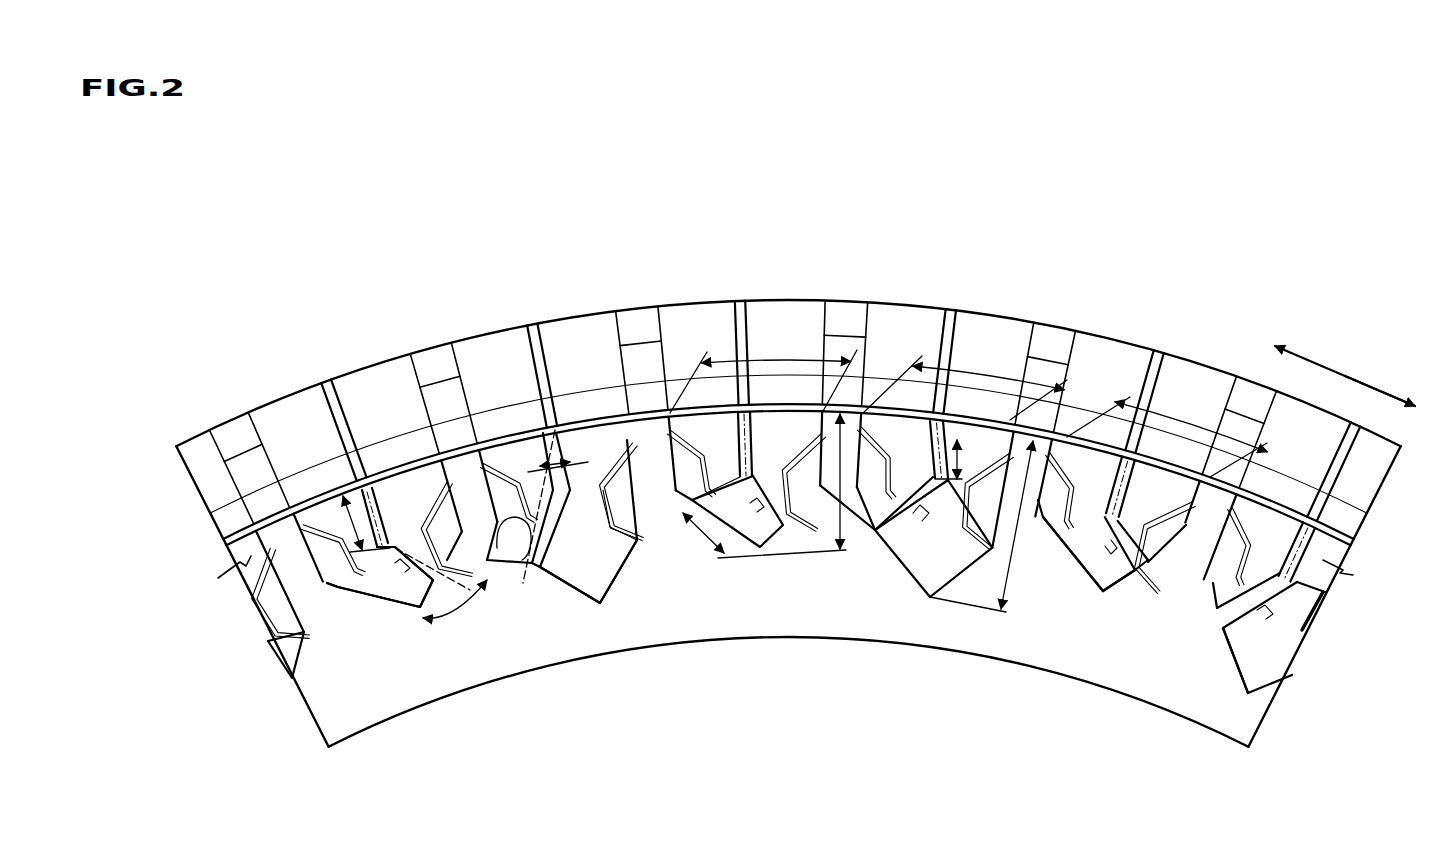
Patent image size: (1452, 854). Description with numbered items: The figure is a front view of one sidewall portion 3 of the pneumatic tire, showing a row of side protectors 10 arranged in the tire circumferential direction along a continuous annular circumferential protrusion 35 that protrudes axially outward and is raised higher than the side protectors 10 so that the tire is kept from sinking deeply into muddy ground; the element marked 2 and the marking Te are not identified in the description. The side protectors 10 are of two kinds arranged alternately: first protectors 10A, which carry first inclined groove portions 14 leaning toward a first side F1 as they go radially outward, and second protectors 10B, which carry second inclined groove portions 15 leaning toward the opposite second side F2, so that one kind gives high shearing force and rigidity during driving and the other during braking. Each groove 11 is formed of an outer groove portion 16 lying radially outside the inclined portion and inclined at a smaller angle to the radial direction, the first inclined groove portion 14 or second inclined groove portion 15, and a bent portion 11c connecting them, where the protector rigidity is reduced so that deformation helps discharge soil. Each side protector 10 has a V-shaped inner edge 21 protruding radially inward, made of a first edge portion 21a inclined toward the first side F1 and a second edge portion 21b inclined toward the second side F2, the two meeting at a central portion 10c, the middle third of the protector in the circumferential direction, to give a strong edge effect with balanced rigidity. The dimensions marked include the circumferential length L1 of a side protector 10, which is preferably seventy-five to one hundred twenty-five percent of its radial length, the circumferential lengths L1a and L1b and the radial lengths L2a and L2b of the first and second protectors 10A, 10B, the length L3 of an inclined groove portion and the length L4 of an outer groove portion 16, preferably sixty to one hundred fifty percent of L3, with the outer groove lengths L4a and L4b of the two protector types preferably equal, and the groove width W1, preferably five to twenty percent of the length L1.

The stator core 2 is at (859, 287).
The sidewall portion 3 is at (215, 610).
The side protector 10 is at (985, 450).
The first protector 10A is at (320, 523).
The second protector 10B is at (512, 462).
The central portion 10c is at (1108, 607).
The groove 11 is at (888, 531).
The bent portion 11c is at (580, 497).
The first inclined groove portion 14 is at (403, 560).
The second inclined groove portion 15 is at (594, 606).
The outer groove portion 16 is at (573, 473).
The inner edge 21 is at (1280, 620).
The first edge portion 21a is at (1117, 530).
The second edge portion 21b is at (1150, 572).
The circumferential protrusion 35 is at (1350, 512).
The outer peripheral surface Te is at (703, 300).
The circumferential length of side protector L1 is at (1195, 430).
The circumferential length of first protector L1a is at (780, 357).
The circumferential length of second protector L1b is at (968, 376).
The radial length of first protector L2a is at (1000, 614).
The radial length of second protector L2b is at (1005, 615).
The length of inclined groove portion L3 is at (697, 535).
The length of outer groove portion L4 is at (838, 550).
The length of outer groove portion of first protector L4a is at (358, 495).
The length of outer groove portion of second protector L4b is at (1012, 440).
The width of groove W1 is at (1250, 640).
The first side F1 is at (1343, 363).
The second side F2 is at (1390, 387).